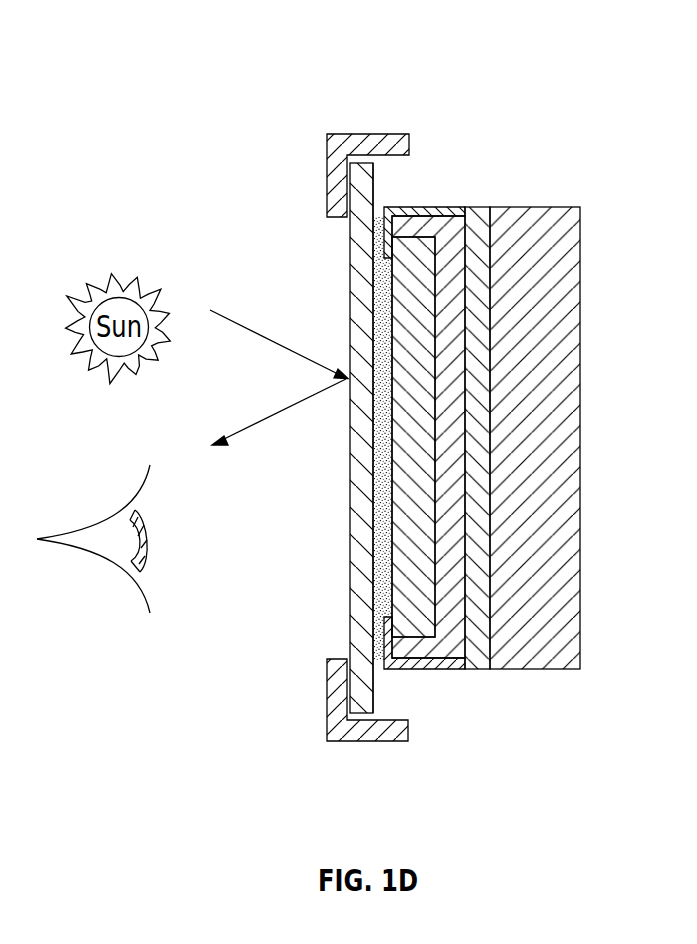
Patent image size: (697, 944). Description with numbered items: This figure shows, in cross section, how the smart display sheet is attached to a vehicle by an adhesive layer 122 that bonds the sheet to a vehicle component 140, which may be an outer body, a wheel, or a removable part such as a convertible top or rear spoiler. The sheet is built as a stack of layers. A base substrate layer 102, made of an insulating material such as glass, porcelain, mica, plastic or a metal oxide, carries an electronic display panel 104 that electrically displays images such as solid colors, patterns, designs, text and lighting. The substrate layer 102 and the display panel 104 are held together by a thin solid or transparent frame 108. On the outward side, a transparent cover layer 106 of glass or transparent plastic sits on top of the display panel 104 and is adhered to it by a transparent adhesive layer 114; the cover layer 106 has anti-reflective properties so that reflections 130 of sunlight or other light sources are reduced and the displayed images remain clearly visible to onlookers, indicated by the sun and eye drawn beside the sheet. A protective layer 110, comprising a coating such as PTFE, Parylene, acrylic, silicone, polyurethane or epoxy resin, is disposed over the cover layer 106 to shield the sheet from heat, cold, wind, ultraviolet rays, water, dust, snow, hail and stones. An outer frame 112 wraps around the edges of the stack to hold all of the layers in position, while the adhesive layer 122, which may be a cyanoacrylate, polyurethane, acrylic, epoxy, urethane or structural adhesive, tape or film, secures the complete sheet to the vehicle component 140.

The base substrate layer 102 is at (447, 340).
The electronic display panel 104 is at (478, 268).
The transparent cover layer 106 is at (373, 190).
The frame 108 is at (445, 207).
The protective layer 110 is at (347, 293).
The outer frame 112 is at (347, 133).
The transparent adhesive layer 114 is at (375, 217).
The adhesive layer 122 is at (438, 252).
The reflections 130 is at (257, 417).
The vehicle component 140 is at (580, 353).